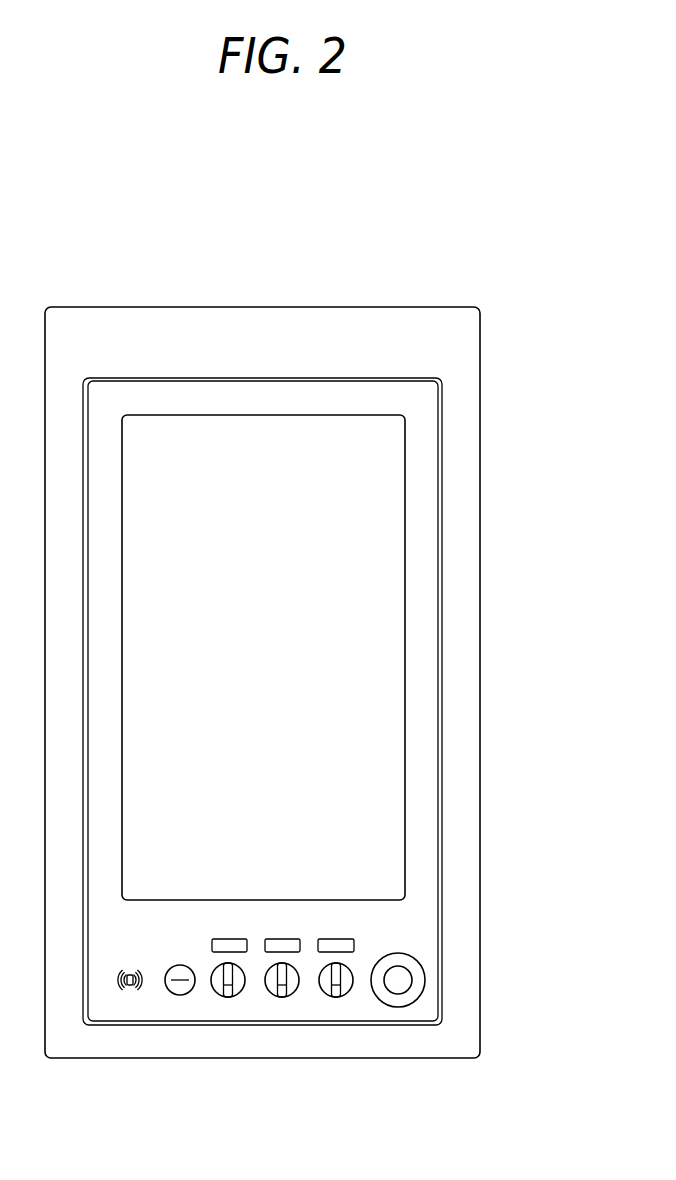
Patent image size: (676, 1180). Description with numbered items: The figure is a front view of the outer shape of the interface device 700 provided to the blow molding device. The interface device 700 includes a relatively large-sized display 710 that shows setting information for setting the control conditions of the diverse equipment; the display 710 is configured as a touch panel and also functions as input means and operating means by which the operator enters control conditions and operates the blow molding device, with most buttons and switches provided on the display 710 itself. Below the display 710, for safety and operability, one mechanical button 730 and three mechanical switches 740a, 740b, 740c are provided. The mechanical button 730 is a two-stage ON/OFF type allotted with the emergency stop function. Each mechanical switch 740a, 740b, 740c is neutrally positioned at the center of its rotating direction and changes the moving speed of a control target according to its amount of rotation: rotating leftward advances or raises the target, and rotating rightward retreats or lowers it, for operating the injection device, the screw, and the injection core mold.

The interface device 700 is at (452, 250).
The display 710 is at (392, 553).
The mechanical button 730 is at (400, 978).
The mechanical switch 740a is at (230, 997).
The mechanical switch 740b is at (284, 997).
The mechanical switch 740c is at (338, 997).